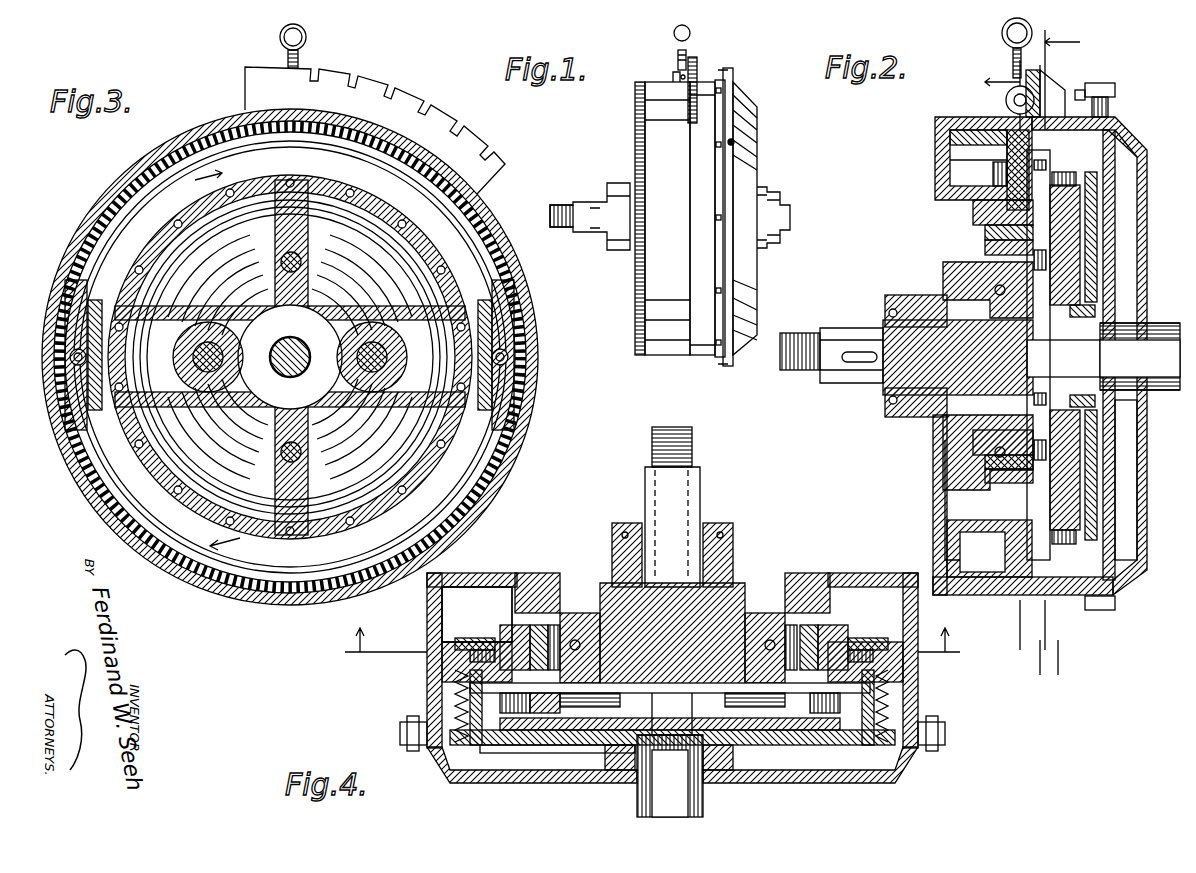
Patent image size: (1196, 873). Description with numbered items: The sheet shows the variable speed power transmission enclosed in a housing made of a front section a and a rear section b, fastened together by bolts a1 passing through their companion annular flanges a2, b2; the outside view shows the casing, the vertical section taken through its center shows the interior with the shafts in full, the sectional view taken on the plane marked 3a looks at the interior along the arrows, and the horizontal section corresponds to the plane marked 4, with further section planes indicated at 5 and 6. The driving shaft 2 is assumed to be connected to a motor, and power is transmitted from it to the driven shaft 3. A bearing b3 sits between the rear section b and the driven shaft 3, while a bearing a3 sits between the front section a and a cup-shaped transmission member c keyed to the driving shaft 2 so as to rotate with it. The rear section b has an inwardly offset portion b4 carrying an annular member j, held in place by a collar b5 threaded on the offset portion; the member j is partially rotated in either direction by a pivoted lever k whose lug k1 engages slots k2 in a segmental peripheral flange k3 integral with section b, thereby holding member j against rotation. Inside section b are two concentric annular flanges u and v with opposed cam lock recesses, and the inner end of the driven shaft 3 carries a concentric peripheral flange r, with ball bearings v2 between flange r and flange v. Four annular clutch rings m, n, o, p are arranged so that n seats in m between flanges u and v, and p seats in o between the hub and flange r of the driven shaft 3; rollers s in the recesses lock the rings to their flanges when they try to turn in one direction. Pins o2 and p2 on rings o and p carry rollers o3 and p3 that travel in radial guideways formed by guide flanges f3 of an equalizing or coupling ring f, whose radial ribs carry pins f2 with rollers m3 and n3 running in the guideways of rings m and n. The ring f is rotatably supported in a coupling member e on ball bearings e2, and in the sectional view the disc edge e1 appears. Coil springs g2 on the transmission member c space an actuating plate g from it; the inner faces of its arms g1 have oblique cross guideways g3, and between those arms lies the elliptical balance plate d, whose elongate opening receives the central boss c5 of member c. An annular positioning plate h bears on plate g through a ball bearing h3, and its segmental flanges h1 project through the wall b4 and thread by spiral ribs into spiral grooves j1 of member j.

In FIG. 1, the driving shaft 2 is at (790, 222).
In FIG. 2, the driving shaft 2 is at (1140, 356).
In FIG. 4, the driving shaft 2 is at (670, 776).
In FIG. 3, the driven shaft 3 is at (290, 376).
In FIG. 1, the driven shaft 3 is at (590, 216).
In FIG. 2, the driven shaft 3 is at (1078, 654).
In FIG. 4, the driven shaft 3 is at (672, 581).
In FIG. 2, the section line 3a is at (1080, 682).
In FIG. 3, the section line 4- 4 is at (572, 349).
In FIG. 2, the section line 5- 5 is at (1008, 654).
In FIG. 4, the section line 5- 5 is at (652, 665).
In FIG. 2, the section line 6- 6 is at (1042, 654).
In FIG. 1, the front housing section a is at (748, 282).
In FIG. 2, the front housing section a is at (1130, 262).
In FIG. 4, the front housing section a is at (858, 778).
In FIG. 1, the bolts a1 is at (735, 143).
In FIG. 2, the bolts a1 is at (1117, 96).
In FIG. 1, the annular flange of front housing section a2 is at (728, 166).
In FIG. 2, the annular flange of front housing section a2 is at (1115, 88).
In FIG. 2, the bearing a3 is at (1100, 308).
In FIG. 4, the bearing a3 is at (612, 770).
In FIG. 3, the rear housing section b is at (78, 212).
In FIG. 1, the rear housing section b is at (702, 218).
In FIG. 2, the rear housing section b is at (932, 537).
In FIG. 4, the rear housing section b is at (512, 575).
In FIG. 1, the annular flange of rear housing section b2 is at (720, 246).
In FIG. 2, the annular flange of rear housing section b2 is at (1095, 612).
In FIG. 2, the bearing b3 is at (885, 307).
In FIG. 4, the bearing b3 is at (712, 525).
In FIG. 2, the inwardly offset portion of housing section b4 is at (947, 598).
In FIG. 4, the inwardly offset portion of housing section b4 is at (441, 643).
In FIG. 1, the collar b5 is at (640, 138).
In FIG. 2, the collar b5 is at (936, 124).
In FIG. 4, the collar b5 is at (425, 590).
In FIG. 3, the cup-shaped transmission member c is at (205, 138).
In FIG. 2, the cup-shaped transmission member c is at (1095, 560).
In FIG. 4, the cup-shaped transmission member c is at (560, 745).
In FIG. 2, the interior central boss of transmission member c5 is at (1137, 446).
In FIG. 2, the balance plate d is at (1105, 165).
In FIG. 4, the balance plate d is at (525, 752).
In FIG. 3, the coupling member e is at (400, 205).
In FIG. 2, the coupling member e is at (1080, 185).
In FIG. 4, the coupling member e is at (852, 700).
In FIG. 3, the disc edge e1 is at (350, 190).
In FIG. 3, the ball bearings e2 is at (292, 181).
In FIG. 2, the ball bearings e2 is at (1068, 350).
In FIG. 3, the equalizing or coupling ring f is at (380, 232).
In FIG. 2, the equalizing or coupling ring f is at (1097, 500).
In FIG. 4, the equalizing or coupling ring f is at (537, 702).
In FIG. 3, the pins f2 is at (305, 248).
In FIG. 2, the pins f2 is at (1050, 276).
In FIG. 3, the guide flanges f3 is at (400, 306).
In FIG. 2, the actuating plate g is at (1000, 150).
In FIG. 4, the actuating plate g is at (440, 660).
In FIG. 3, the arms of actuating plate g1 is at (500, 385).
In FIG. 4, the arms of actuating plate g1 is at (462, 750).
In FIG. 3, the coil springs g2 is at (510, 360).
In FIG. 4, the coil springs g2 is at (440, 700).
In FIG. 3, the oblique cross grooves or guideways g3 is at (488, 332).
In FIG. 4, the oblique cross grooves or guideways g3 is at (476, 748).
In FIG. 2, the annular positioning plate h is at (996, 168).
In FIG. 4, the annular positioning plate h is at (672, 631).
In FIG. 3, the peripheral segmental flanges h1 is at (255, 140).
In FIG. 2, the ball bearing h3 is at (998, 383).
In FIG. 4, the ball bearing h3 is at (672, 637).
In FIG. 1, the annular member j is at (667, 218).
In FIG. 2, the annular member j is at (955, 116).
In FIG. 4, the annular member j is at (441, 615).
In FIG. 2, the spiral grooves j1 is at (936, 146).
In FIG. 3, the pivoted lever k is at (280, 40).
In FIG. 1, the pivoted lever k is at (678, 38).
In FIG. 2, the pivoted lever k is at (1002, 38).
In FIG. 3, the lug k1 is at (287, 72).
In FIG. 1, the lug k1 is at (677, 60).
In FIG. 2, the lug k1 is at (1012, 60).
In FIG. 3, the slots k2 is at (376, 75).
In FIG. 1, the slots k2 is at (698, 70).
In FIG. 3, the segmental peripheral flange k3 is at (498, 165).
In FIG. 1, the segmental peripheral flange k3 is at (693, 58).
In FIG. 2, the segmental peripheral flange k3 is at (1006, 102).
In FIG. 2, the clutch ring m is at (984, 222).
In FIG. 4, the clutch ring m is at (538, 622).
In FIG. 3, the roller m3 is at (283, 258).
In FIG. 2, the roller m3 is at (1050, 246).
In FIG. 2, the clutch ring n is at (984, 244).
In FIG. 4, the clutch ring n is at (661, 630).
In FIG. 3, the roller n3 is at (283, 455).
In FIG. 2, the roller n3 is at (1050, 474).
In FIG. 2, the clutch ring o is at (994, 290).
In FIG. 4, the clutch ring o is at (578, 640).
In FIG. 3, the pin o2 is at (355, 362).
In FIG. 3, the roller o3 is at (345, 340).
In FIG. 4, the roller o3 is at (786, 702).
In FIG. 2, the clutch ring p is at (970, 331).
In FIG. 4, the clutch ring p is at (600, 600).
In FIG. 3, the pin p2 is at (240, 340).
In FIG. 3, the roller p3 is at (226, 360).
In FIG. 4, the roller p3 is at (560, 702).
In FIG. 2, the concentric peripheral flange of driven shaft r is at (944, 450).
In FIG. 2, the rollers s is at (972, 205).
In FIG. 4, the rollers s is at (535, 600).
In FIG. 2, the outer annular flange u is at (1020, 356).
In FIG. 4, the outer annular flange u is at (498, 612).
In FIG. 2, the inner annular flange v is at (942, 270).
In FIG. 4, the inner annular flange v is at (568, 600).
In FIG. 2, the ball bearings v2 is at (1003, 324).
In FIG. 4, the ball bearings v2 is at (775, 590).